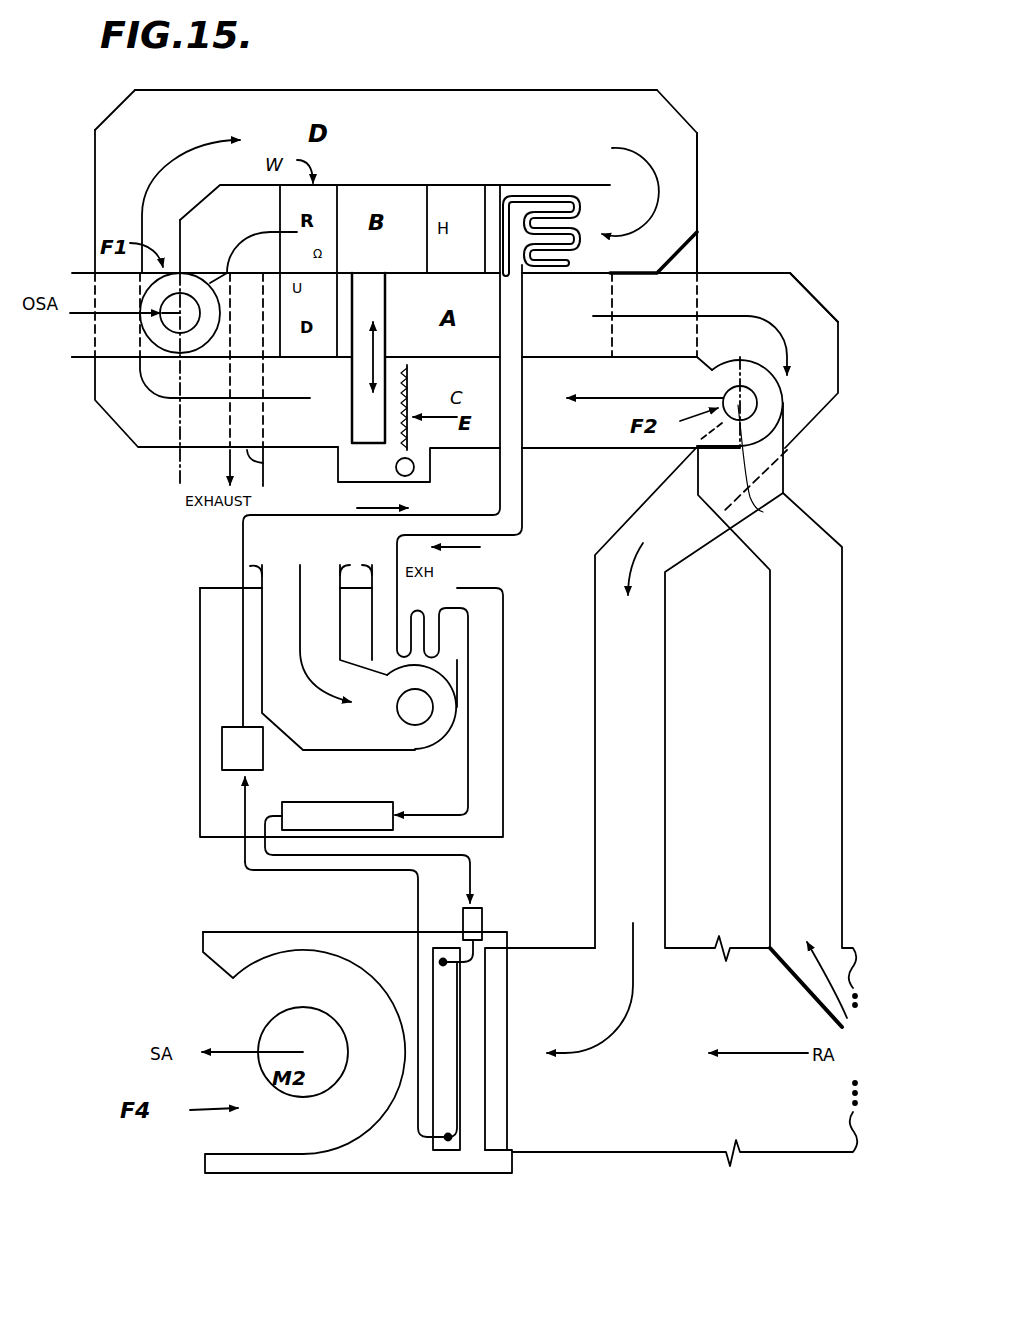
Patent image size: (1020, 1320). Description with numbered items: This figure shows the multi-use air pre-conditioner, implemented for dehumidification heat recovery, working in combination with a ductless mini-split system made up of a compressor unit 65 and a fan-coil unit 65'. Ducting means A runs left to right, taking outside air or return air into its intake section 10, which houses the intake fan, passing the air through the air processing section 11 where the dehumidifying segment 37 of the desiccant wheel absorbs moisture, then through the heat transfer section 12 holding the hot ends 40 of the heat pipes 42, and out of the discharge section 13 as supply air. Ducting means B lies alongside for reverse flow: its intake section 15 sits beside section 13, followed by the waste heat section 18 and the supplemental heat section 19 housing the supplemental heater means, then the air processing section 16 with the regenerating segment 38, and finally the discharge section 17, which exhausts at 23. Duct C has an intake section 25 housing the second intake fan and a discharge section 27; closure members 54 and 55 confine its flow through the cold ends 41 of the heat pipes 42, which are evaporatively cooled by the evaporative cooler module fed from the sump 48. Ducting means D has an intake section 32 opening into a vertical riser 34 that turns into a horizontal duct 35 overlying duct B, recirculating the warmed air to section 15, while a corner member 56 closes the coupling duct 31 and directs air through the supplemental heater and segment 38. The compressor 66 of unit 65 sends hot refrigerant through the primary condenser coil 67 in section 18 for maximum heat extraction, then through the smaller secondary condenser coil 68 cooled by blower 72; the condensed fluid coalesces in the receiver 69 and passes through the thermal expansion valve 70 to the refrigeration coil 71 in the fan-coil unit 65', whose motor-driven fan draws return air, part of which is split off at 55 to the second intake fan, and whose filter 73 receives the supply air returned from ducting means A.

The intake section 10 is at (117, 360).
The air processing section 11 is at (318, 299).
The heat transfer section 12 is at (393, 292).
The discharge section 13 is at (748, 290).
The intake section 15 is at (670, 224).
The air processing section 16 is at (322, 206).
The discharge section 17 is at (227, 203).
The waste heat section 18 is at (595, 203).
The supplemental heat section 19 is at (477, 157).
The exhaust 23 is at (203, 468).
The intake section 25 is at (703, 434).
The discharge section 27 is at (205, 427).
The coupling duct 31 is at (603, 331).
The intake section 32 is at (664, 152).
The vertical riser 34 is at (130, 165).
The horizontal duct 35 is at (396, 106).
The dehumidifying segment 37 is at (293, 338).
The regenerating segment 38 is at (330, 243).
The hot end 40 is at (378, 338).
The cold end 41 is at (352, 428).
The heat pipes 42 is at (351, 378).
The sump 48 is at (353, 486).
The closure member 54 is at (648, 362).
The closure member 55 is at (800, 988).
The corner member 56 is at (680, 250).
The compressor unit 65 is at (321, 690).
The fan-coil unit 65' is at (371, 1052).
The compressor 66 is at (232, 747).
The primary condenser coil 67 is at (553, 192).
The secondary condenser coil 68 is at (423, 607).
The receiver 69 is at (335, 810).
The thermal expansion valve 70 is at (478, 922).
The refrigeration coil 71 is at (450, 999).
The blower 72 is at (383, 716).
The filter 73 is at (505, 1097).